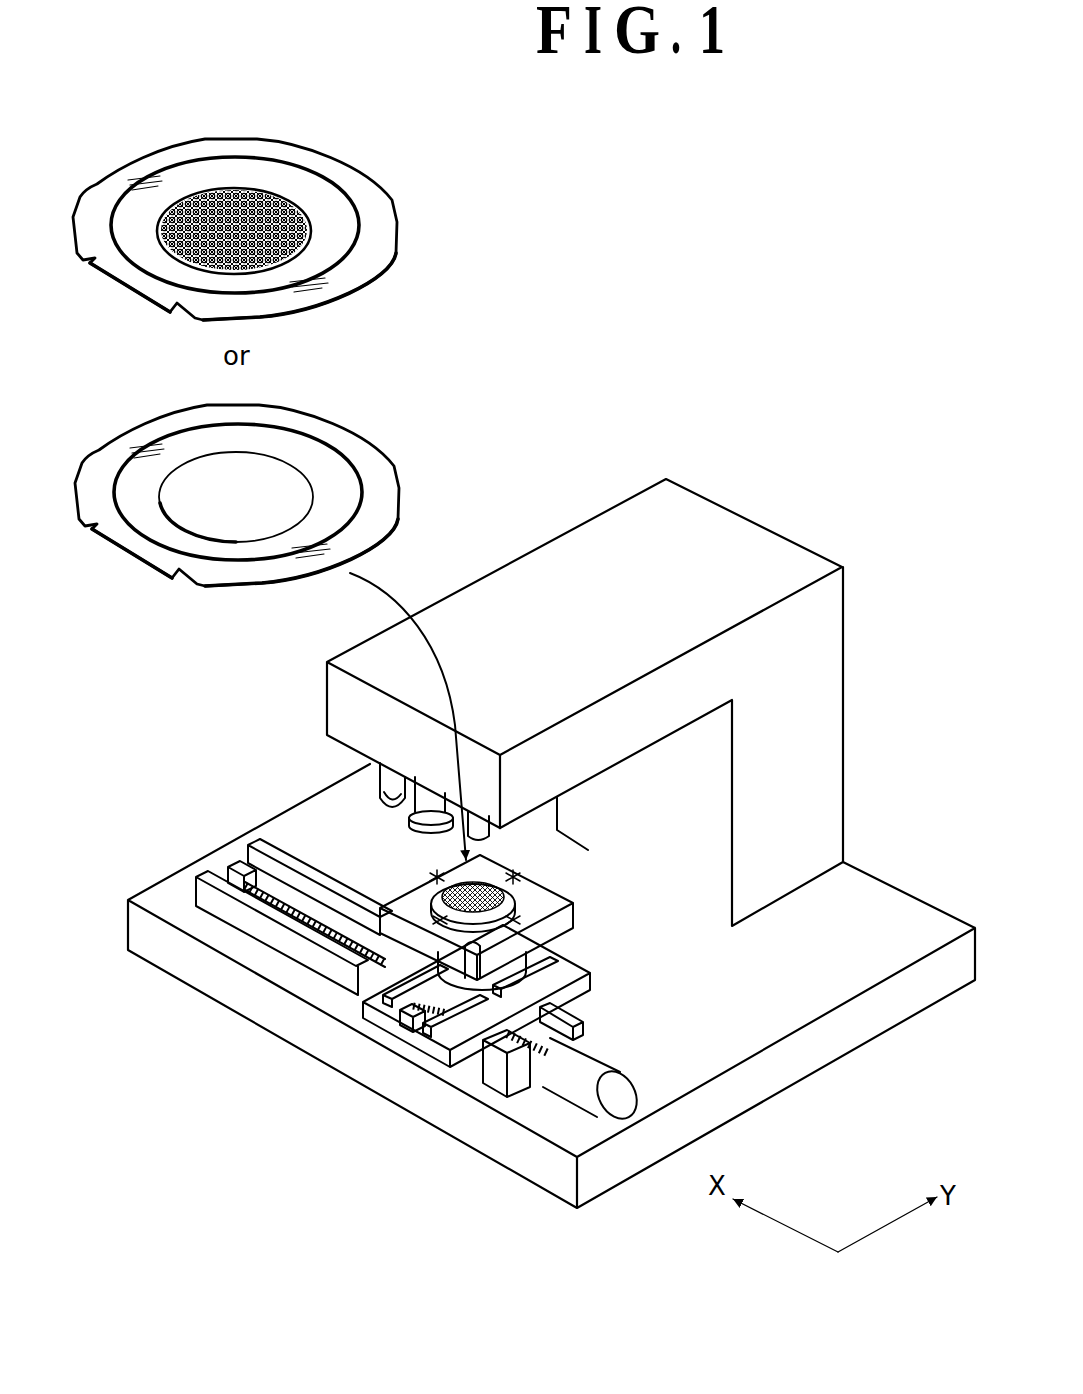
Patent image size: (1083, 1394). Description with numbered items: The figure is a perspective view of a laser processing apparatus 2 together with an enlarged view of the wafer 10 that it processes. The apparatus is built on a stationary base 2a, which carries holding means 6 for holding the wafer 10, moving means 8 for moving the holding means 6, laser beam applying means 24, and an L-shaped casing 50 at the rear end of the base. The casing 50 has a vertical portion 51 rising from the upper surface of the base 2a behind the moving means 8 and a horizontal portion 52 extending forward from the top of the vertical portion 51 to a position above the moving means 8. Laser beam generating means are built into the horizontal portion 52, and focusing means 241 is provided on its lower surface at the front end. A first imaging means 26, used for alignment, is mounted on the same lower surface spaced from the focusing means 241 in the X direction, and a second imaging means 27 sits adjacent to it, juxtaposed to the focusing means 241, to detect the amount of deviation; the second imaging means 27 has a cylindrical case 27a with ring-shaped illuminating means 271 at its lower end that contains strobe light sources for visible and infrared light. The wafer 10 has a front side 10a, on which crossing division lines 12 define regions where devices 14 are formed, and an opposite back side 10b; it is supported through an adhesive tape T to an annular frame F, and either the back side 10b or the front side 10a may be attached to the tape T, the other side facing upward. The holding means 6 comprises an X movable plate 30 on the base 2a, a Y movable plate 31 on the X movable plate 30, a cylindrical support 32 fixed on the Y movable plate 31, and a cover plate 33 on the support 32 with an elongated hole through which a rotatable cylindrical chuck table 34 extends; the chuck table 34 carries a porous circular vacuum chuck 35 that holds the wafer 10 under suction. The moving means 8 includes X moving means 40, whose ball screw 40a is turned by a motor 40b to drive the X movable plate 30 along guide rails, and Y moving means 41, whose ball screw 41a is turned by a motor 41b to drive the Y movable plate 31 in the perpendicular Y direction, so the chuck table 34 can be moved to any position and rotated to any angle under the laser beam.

The laser processing apparatus 2 is at (555, 834).
The stationary base 2a is at (900, 907).
The holding means 6 is at (393, 1046).
The moving means 8 is at (566, 961).
The wafer 10 is at (285, 315).
The front side 10a is at (308, 226).
The back side 10b is at (290, 488).
The division lines 12 is at (285, 179).
The devices 14 is at (293, 205).
The adhesive tape T is at (135, 208).
The annular frame F is at (370, 206).
The laser beam applying means 24 is at (421, 813).
The focusing means 241 is at (378, 787).
The first imaging means 26 is at (492, 840).
The second imaging means 27 is at (391, 820).
The cylindrical case 27a is at (413, 824).
The illuminating means 271 is at (434, 880).
The X movable plate 30 is at (428, 1044).
The Y movable plate 31 is at (500, 1077).
The cylindrical support 32 is at (497, 950).
The cover plate 33 is at (466, 975).
The chuck table 34 is at (370, 920).
The vacuum chuck 35 is at (408, 908).
The X moving means 40 is at (554, 1041).
The ball screw 40a is at (562, 1030).
The motor 40b is at (598, 1060).
The Y moving means 41 is at (549, 893).
The ball screw 41a is at (573, 938).
The motor 41b is at (567, 945).
The L-shaped casing 50 is at (634, 693).
The vertical portion 51 is at (822, 703).
The horizontal portion 52 is at (588, 535).